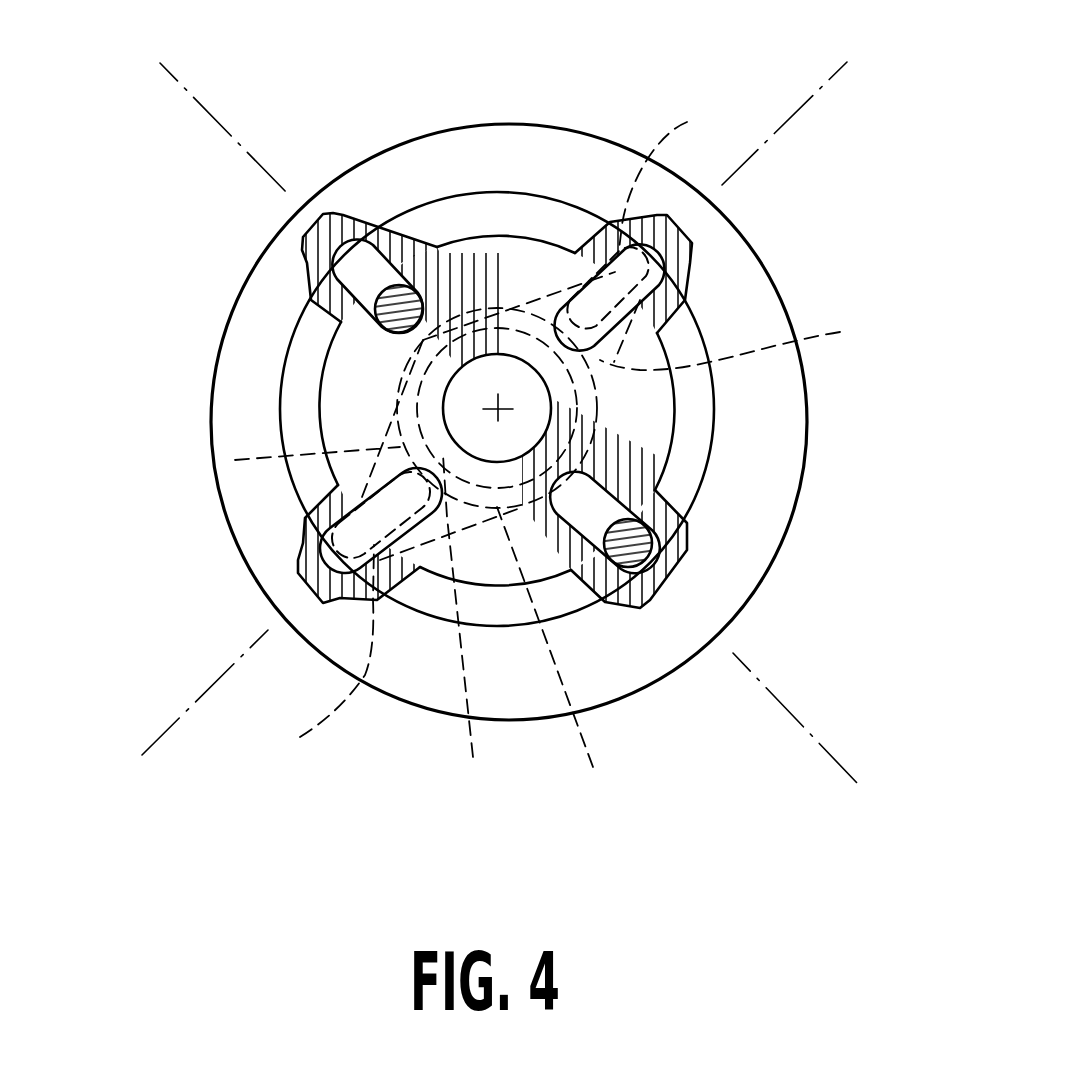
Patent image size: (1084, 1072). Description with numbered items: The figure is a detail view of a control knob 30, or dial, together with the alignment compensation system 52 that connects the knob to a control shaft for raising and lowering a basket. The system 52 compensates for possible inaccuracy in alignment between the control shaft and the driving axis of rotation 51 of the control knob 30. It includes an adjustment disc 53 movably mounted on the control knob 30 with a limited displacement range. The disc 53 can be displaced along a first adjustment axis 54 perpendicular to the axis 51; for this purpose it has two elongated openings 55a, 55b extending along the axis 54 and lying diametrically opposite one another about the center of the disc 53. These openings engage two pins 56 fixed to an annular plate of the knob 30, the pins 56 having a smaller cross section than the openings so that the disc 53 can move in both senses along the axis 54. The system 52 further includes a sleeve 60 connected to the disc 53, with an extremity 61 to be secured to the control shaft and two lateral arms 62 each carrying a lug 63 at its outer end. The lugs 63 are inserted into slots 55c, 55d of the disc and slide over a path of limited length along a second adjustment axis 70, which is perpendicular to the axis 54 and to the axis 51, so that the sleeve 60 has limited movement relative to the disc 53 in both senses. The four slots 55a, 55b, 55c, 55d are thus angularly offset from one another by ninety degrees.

The control knob 30 is at (512, 398).
The driving axis of rotation 51 is at (503, 407).
The alignment compensation system 52 is at (318, 381).
The adjustment disc 53 is at (509, 252).
The first adjustment axis 54 is at (176, 82).
The elongated opening 55a is at (362, 243).
The elongated opening 55b is at (624, 607).
The slot 55c is at (660, 270).
The slot 55d is at (372, 548).
The pin 56 is at (388, 305).
The sleeve 60 is at (235, 460).
The extremity 61 is at (506, 652).
The lateral arm 62 is at (840, 332).
The lug 63 is at (494, 428).
The second linear adjustment axis 70 is at (830, 80).